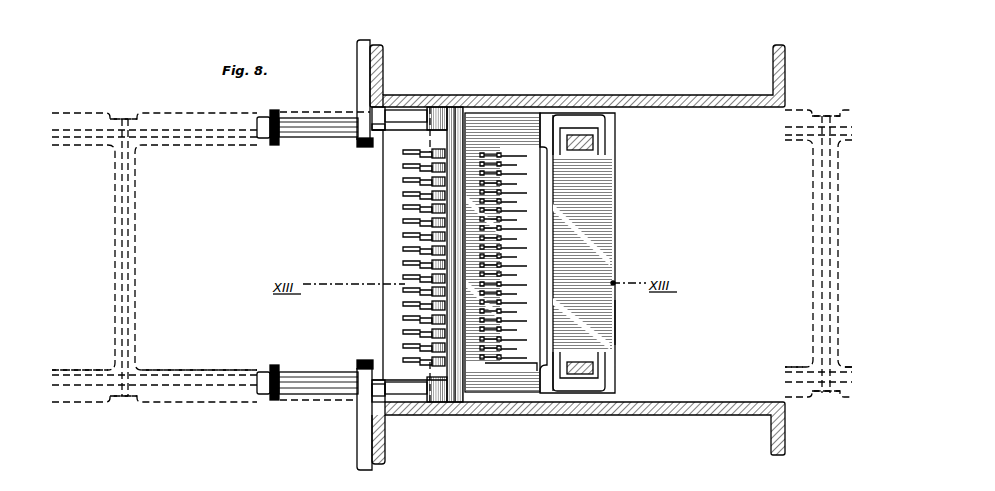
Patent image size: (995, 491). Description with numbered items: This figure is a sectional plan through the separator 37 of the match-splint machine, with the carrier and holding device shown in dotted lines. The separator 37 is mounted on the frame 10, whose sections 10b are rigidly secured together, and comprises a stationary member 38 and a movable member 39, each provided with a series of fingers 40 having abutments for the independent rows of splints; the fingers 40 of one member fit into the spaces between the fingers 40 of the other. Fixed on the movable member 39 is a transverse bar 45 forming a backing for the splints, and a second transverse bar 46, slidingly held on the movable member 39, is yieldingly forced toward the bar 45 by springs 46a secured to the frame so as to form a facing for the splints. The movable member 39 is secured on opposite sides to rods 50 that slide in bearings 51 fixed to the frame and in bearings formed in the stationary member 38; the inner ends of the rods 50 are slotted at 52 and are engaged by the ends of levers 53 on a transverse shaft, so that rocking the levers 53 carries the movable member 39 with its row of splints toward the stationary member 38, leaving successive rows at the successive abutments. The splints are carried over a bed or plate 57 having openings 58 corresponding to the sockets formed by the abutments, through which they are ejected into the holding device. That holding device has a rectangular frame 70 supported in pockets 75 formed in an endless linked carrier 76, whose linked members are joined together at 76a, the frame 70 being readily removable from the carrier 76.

The frame 10 is at (584, 76).
The sections 10b is at (585, 428).
The separator 37 is at (591, 253).
The stationary member 38 is at (617, 323).
The movable member 39 is at (383, 307).
The fingers 40 is at (413, 185).
The transverse bar 45 is at (457, 403).
The second transverse bar 46 is at (440, 412).
The springs 46a is at (420, 96).
The rods 50 is at (310, 136).
The bearings 51 is at (362, 90).
The slots 52 is at (602, 138).
The levers 53 is at (582, 150).
The bed or plate 57 is at (486, 363).
The openings 58 is at (513, 312).
The frame 70 is at (202, 146).
The pockets 75 is at (198, 372).
The endless linked carrier 76 is at (157, 118).
The joints of the carrier members 76a is at (125, 111).